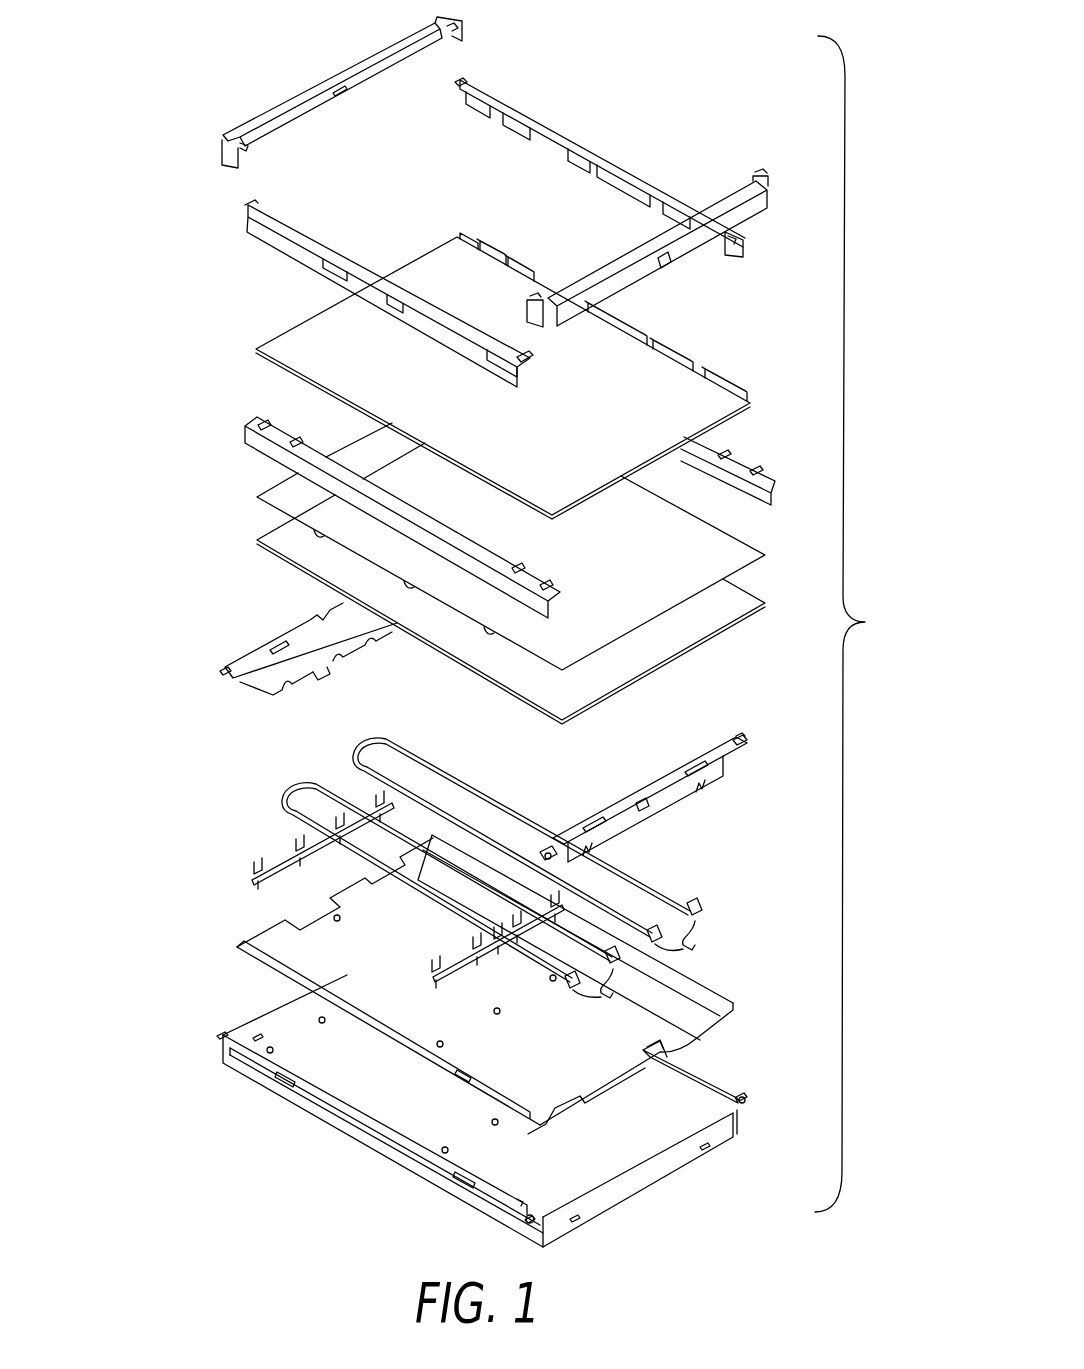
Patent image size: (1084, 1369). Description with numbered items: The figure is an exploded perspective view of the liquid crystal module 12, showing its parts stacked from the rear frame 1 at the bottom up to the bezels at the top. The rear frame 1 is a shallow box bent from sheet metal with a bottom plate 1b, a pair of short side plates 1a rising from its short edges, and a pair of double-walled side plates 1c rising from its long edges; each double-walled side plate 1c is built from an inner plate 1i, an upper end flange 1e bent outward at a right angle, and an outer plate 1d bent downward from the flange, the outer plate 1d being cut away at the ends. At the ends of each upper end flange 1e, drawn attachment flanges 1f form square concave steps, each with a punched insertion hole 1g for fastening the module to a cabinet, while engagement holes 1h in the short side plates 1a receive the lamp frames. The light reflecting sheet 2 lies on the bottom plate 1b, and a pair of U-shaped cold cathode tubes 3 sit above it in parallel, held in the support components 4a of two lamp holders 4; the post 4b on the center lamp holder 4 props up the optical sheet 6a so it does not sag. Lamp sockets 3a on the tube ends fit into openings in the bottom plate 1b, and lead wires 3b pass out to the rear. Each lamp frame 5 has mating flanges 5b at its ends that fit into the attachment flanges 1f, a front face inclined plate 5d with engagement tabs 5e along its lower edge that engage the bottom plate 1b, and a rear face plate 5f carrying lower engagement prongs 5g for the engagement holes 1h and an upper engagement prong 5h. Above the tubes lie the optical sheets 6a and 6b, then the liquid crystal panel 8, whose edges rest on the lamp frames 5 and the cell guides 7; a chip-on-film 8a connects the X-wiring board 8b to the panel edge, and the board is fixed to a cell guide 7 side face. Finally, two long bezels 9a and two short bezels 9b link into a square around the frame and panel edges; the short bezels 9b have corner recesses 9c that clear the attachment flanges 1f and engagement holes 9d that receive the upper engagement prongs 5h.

The rear frame 1 is at (400, 1117).
The short side plate 1a is at (268, 1012).
The bottom plate 1b is at (383, 1141).
The double-walled long side plate 1c is at (407, 1167).
The outer plate 1d is at (447, 1182).
The upper end flange 1e is at (520, 1203).
The attachment flange 1f is at (220, 1036).
The insertion hole 1g is at (537, 1214).
The engagement hole 1h is at (708, 1150).
The inner plate 1i is at (287, 1093).
The light reflecting sheet 2 is at (648, 1020).
The U-shaped cold cathode tube 3 is at (322, 782).
The lamp socket 3a is at (700, 907).
The lead wire 3b is at (697, 945).
The lamp holder 4 is at (280, 863).
The support component 4a is at (257, 868).
The post 4b is at (506, 935).
The lamp frame 5 is at (293, 623).
The mating flange 5b is at (222, 670).
The front face inclined plate 5d is at (277, 680).
The engagement tab 5e is at (327, 677).
The rear face plate 5f is at (620, 830).
The lower engagement prong 5g is at (707, 787).
The upper engagement prong 5h is at (650, 805).
The optical sheet 6a is at (727, 615).
The optical sheet 6b is at (740, 556).
The cell guide 7 is at (748, 453).
The liquid crystal panel 8 is at (293, 337).
The chip-on-film 8a is at (672, 352).
The X-wiring board 8b is at (700, 370).
The long bezel 9a is at (583, 140).
The short bezel 9b is at (310, 85).
The recess 9c is at (440, 22).
The engagement hole 9d is at (670, 258).
The liquid crystal module 12 is at (856, 624).